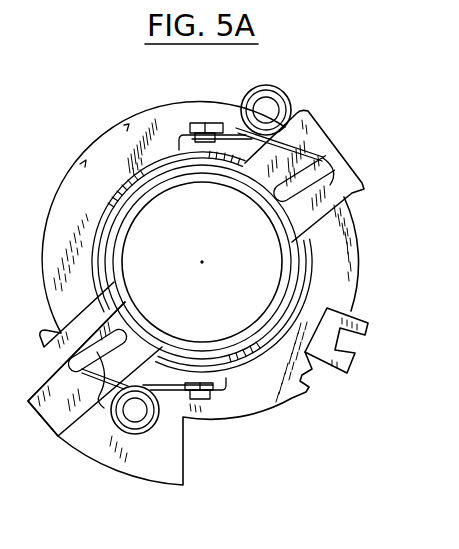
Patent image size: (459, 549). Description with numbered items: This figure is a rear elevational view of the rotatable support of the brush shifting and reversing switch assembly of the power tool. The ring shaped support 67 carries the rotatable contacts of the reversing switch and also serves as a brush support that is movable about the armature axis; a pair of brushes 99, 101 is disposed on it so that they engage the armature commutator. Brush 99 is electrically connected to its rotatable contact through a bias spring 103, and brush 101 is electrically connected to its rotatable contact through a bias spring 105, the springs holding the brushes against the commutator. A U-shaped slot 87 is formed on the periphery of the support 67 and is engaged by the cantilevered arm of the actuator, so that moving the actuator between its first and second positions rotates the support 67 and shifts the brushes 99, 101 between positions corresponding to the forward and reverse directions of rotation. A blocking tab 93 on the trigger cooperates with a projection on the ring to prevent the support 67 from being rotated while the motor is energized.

The ring shaped support 67 is at (121, 132).
The U-shaped slot 87 is at (355, 353).
The blocking tab 93 is at (168, 450).
The brush 99 is at (365, 186).
The brush 101 is at (60, 440).
The bias spring 103 is at (287, 100).
The bias spring 105 is at (140, 437).